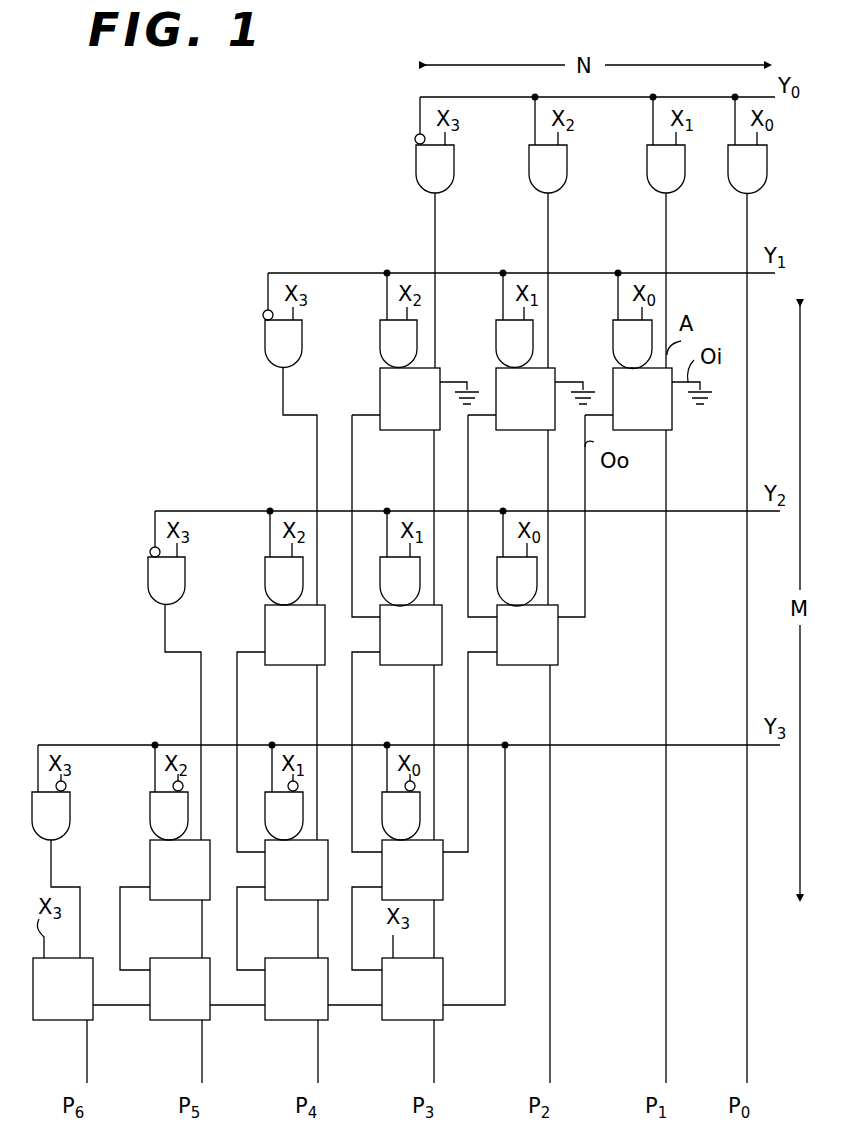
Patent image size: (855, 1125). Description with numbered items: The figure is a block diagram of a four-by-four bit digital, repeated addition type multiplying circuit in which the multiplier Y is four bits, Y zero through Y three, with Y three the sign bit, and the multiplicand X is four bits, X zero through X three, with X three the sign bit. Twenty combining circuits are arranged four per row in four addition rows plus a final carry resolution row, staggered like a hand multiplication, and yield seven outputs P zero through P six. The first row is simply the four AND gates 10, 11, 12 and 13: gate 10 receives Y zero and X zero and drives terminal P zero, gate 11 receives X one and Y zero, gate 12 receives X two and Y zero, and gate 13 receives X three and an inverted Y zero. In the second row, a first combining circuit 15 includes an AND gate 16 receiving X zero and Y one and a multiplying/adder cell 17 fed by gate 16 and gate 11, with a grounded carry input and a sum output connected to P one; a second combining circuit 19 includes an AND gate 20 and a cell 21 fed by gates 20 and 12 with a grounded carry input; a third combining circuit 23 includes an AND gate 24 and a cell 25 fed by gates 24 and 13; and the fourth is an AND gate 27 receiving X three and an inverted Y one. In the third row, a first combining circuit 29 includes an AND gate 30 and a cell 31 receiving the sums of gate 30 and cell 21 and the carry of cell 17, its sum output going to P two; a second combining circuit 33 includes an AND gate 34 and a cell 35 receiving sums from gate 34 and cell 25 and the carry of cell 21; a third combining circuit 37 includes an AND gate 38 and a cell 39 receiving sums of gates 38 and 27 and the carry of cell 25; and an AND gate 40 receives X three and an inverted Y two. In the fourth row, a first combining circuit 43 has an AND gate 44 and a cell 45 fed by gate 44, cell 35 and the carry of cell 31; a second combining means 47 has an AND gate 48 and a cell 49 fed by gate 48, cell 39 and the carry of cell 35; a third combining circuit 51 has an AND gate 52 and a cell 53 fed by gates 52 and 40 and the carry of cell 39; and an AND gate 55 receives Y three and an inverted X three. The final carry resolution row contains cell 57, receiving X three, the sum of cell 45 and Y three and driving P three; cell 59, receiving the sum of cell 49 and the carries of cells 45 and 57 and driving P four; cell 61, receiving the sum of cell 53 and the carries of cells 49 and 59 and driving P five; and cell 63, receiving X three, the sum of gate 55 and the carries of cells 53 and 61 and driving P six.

The AND gate 10 is at (728, 182).
The AND gate 11 is at (647, 184).
The AND gate 12 is at (529, 184).
The AND gate 13 is at (416, 184).
The first combining circuit 15 is at (656, 375).
The AND gate 16 is at (613, 358).
The multiplying/adder cell 17 is at (672, 433).
The second combining circuit 19 is at (522, 380).
The AND gate 20 is at (496, 357).
The multiply/adder cell 21 is at (525, 431).
The third combining circuit 23 is at (407, 377).
The AND gate 24 is at (380, 357).
The multiply/adder cell 25 is at (405, 431).
The AND gate 27 is at (265, 357).
The first combining circuit 29 is at (521, 626).
The AND gate 30 is at (497, 593).
The multiply/adder cell 31 is at (557, 666).
The second combining circuit 33 is at (405, 626).
The AND gate 34 is at (380, 593).
The multiply/adder cell 35 is at (440, 666).
The third combining circuit 37 is at (281, 626).
The AND gate 38 is at (265, 585).
The multiply/adder cell 39 is at (320, 666).
The AND gate 40 is at (148, 585).
The first combining circuit 43 is at (417, 861).
The AND gate 44 is at (382, 822).
The multiply/adder cell 45 is at (443, 895).
The second combining means 47 is at (291, 861).
The AND gate 48 is at (265, 822).
The multiply/adder cell 49 is at (328, 900).
The third combining circuit 51 is at (165, 861).
The AND gate 52 is at (150, 820).
The multiply/adder cell 53 is at (210, 900).
The AND gate 55 is at (68, 830).
The multiply/adder cell 57 is at (443, 1022).
The multiply/adder cell 59 is at (328, 1022).
The multiply/adder cell 61 is at (210, 1022).
The multiply/adder cell 63 is at (93, 1022).